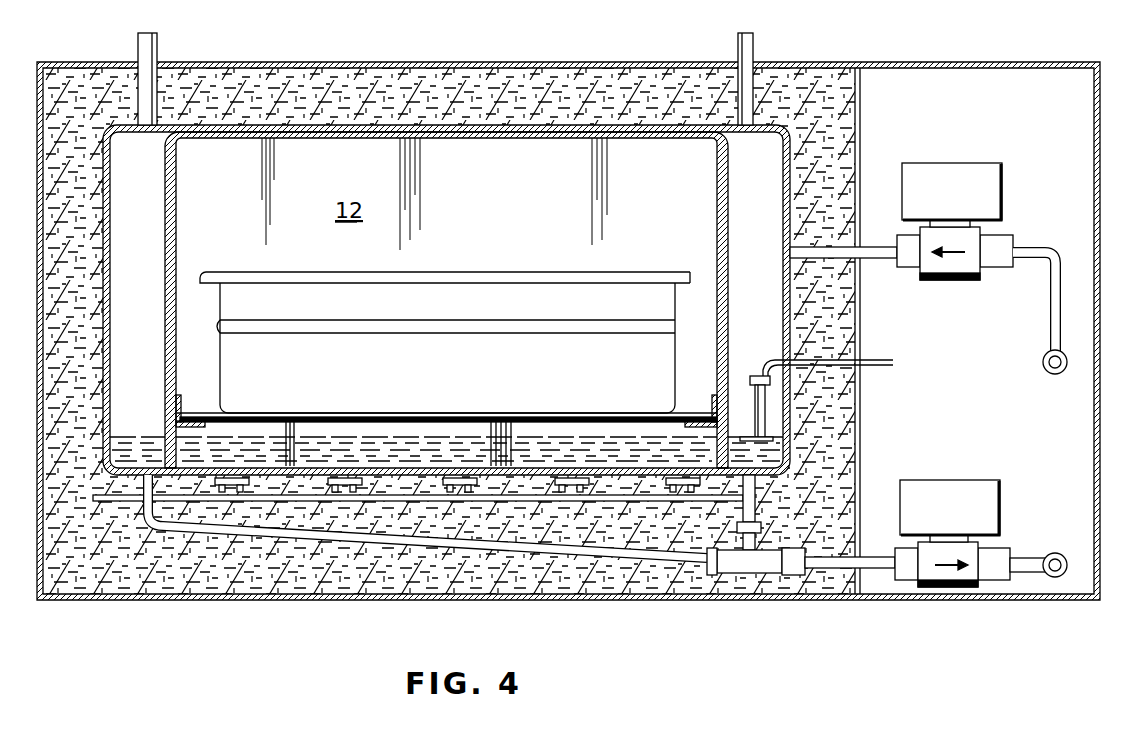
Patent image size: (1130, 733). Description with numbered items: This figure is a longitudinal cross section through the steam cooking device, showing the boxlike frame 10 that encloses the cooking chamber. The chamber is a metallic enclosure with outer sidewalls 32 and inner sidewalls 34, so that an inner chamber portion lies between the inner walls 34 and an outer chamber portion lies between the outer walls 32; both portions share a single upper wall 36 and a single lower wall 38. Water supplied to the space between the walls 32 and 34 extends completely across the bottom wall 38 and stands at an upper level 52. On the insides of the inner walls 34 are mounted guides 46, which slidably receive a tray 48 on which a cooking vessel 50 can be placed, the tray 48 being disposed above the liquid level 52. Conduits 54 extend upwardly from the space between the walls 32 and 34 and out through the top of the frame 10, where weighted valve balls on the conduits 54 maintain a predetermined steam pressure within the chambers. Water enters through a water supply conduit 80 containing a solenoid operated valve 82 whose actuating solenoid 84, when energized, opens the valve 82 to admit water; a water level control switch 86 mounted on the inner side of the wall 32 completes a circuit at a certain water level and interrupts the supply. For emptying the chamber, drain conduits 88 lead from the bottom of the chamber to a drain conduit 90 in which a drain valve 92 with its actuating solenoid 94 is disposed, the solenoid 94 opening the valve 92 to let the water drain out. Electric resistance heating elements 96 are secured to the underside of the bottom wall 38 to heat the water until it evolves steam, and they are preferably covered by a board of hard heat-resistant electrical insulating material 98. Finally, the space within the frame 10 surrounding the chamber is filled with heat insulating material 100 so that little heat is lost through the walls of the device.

The boxlike frame 10 is at (832, 60).
The outer sidewalls 32 is at (113, 233).
The inner sidewalls 34 is at (177, 258).
The upper wall 36 is at (540, 135).
The lower wall 38 is at (622, 470).
The guides 46 is at (185, 400).
The tray 48 is at (528, 420).
The cooking vessel 50 is at (450, 292).
The upper level of liquid 52 is at (420, 435).
The conduits 54 is at (157, 50).
The water supply conduit 80 is at (1037, 248).
The solenoid operated valve 82 is at (972, 270).
The actuating solenoid 84 is at (963, 173).
The water level control switch 86 is at (763, 422).
The drain conduits 88 is at (737, 507).
The drain conduit 90 is at (1030, 563).
The drain valve 92 is at (947, 587).
The actuating solenoid 94 is at (955, 493).
The electric resistance heating elements 96 is at (348, 478).
The board of heat-resistant electrical insulating material 98 is at (360, 565).
The heat insulating material 100 is at (455, 92).